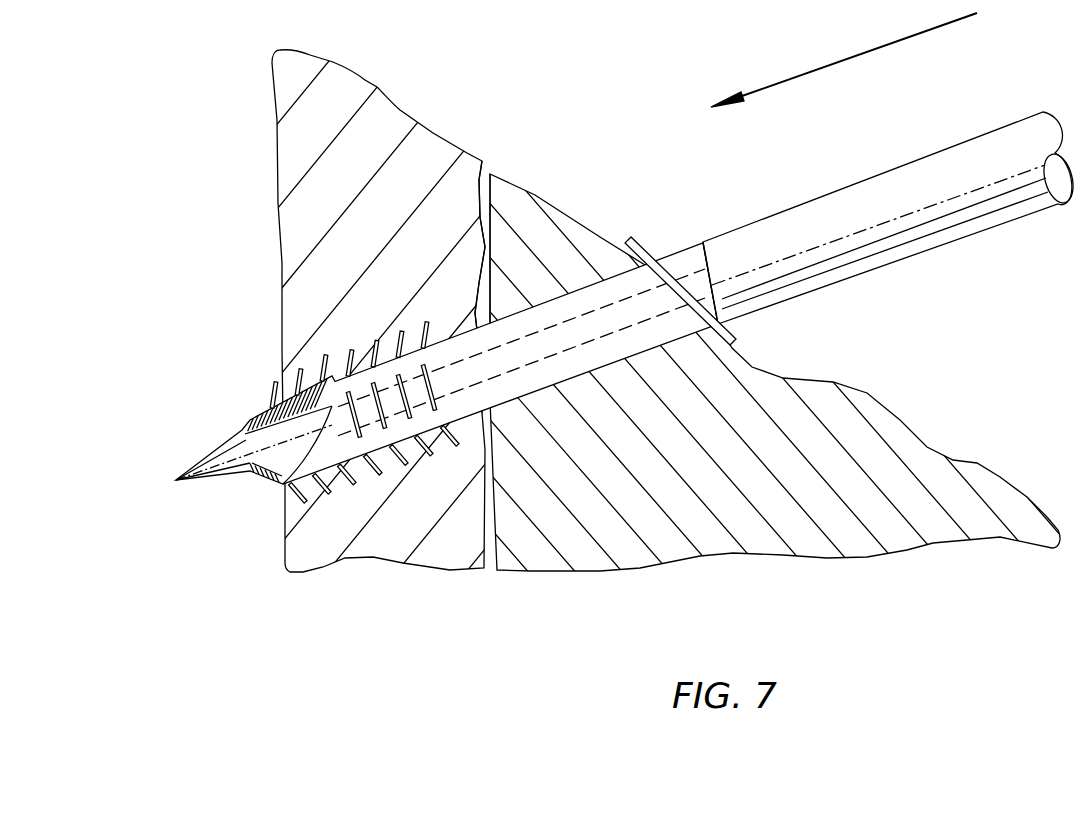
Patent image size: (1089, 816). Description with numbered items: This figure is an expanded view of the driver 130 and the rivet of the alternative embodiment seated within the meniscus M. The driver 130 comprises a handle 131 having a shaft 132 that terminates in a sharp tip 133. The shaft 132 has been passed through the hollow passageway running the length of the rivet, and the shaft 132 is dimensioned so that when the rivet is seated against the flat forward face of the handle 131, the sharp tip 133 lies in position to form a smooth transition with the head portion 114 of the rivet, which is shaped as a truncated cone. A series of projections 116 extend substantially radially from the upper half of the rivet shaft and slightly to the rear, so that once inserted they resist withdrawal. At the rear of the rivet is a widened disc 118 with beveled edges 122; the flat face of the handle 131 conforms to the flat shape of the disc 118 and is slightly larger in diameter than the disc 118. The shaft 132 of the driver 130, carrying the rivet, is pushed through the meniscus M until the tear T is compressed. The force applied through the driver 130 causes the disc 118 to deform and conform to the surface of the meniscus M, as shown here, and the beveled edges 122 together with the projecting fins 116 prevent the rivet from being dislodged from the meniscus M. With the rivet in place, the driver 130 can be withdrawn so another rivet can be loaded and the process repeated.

The head portion 114 is at (251, 421).
The projections 116 is at (421, 438).
The widened disc 118 is at (652, 247).
The beveled edges 122 is at (733, 340).
The driver 130 is at (928, 348).
The handle 131 is at (923, 248).
The shaft 132 is at (690, 267).
The sharp tip 133 is at (215, 480).
The meniscus M is at (307, 230).
The tear T is at (480, 160).